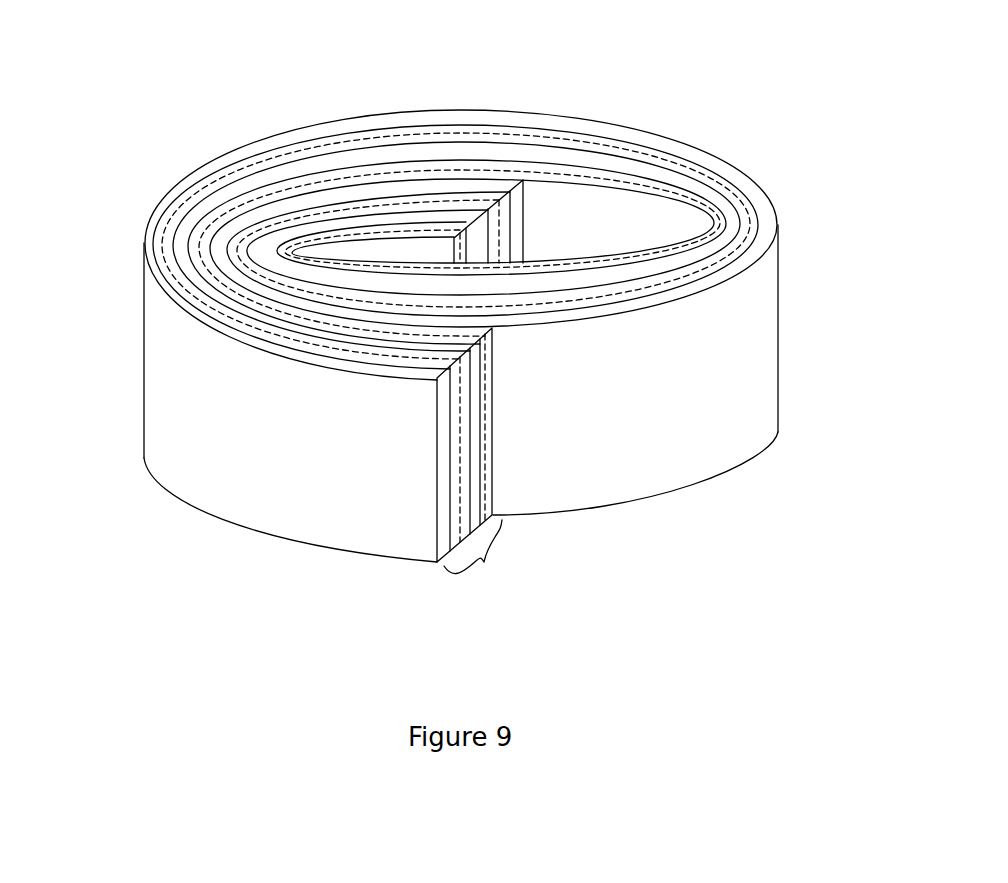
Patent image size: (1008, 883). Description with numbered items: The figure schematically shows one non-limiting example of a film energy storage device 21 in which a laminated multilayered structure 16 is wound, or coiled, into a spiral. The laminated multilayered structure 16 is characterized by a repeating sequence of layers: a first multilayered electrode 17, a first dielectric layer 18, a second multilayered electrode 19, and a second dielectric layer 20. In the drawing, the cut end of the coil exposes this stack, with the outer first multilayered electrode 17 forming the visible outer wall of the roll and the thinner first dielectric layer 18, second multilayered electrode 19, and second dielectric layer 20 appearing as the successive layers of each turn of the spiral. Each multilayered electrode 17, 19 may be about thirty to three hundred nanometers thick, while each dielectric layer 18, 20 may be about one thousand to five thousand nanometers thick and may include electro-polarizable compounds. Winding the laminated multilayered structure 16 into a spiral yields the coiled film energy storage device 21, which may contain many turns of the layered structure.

The laminated multilayered structure 16 is at (482, 465).
The first multilayered electrode 17 is at (320, 506).
The first dielectric layer 18 is at (458, 513).
The second multilayered electrode 19 is at (468, 442).
The second dielectric layer 20 is at (494, 384).
The film energy storage device 21 is at (518, 83).